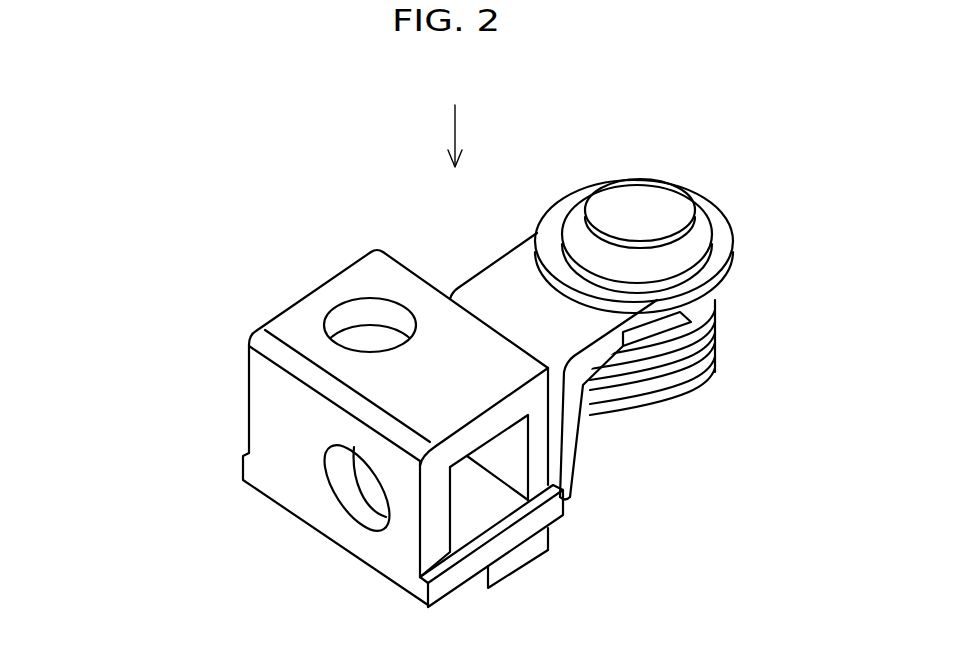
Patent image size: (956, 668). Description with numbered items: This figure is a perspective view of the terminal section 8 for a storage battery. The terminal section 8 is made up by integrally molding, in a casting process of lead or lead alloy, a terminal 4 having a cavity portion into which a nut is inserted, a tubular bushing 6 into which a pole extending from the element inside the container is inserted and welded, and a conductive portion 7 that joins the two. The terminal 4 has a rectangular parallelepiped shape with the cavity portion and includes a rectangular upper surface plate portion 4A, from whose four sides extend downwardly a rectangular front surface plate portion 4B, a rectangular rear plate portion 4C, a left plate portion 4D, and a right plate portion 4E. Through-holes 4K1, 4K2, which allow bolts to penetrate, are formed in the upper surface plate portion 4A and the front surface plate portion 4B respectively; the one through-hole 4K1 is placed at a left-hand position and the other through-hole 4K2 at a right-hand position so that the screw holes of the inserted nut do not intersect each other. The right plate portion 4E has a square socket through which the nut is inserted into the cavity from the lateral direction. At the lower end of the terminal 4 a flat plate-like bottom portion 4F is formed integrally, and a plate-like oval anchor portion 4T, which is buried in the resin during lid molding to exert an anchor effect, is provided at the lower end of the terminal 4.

The terminal 4 is at (277, 415).
The upper surface plate portion 4A is at (362, 283).
The front surface plate portion 4B is at (307, 450).
The rear plate portion 4C is at (427, 281).
The left plate portion 4D is at (240, 372).
The right plate portion 4E is at (435, 543).
The bottom portion 4F is at (447, 577).
The anchor portion 4T is at (523, 550).
The through-hole 4K1 is at (357, 320).
The through-hole 4K2 is at (357, 497).
The bushing 6 is at (722, 265).
The conductive portion 7 is at (570, 410).
The terminal section 8 is at (455, 116).